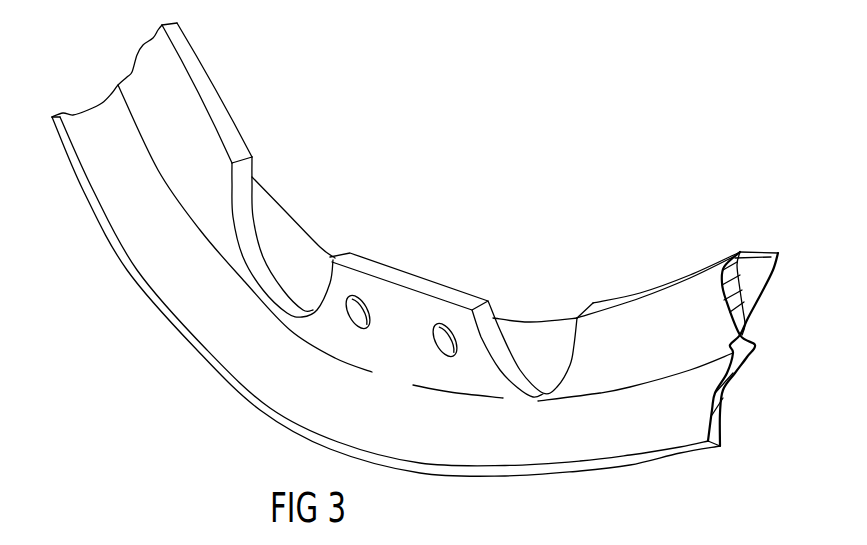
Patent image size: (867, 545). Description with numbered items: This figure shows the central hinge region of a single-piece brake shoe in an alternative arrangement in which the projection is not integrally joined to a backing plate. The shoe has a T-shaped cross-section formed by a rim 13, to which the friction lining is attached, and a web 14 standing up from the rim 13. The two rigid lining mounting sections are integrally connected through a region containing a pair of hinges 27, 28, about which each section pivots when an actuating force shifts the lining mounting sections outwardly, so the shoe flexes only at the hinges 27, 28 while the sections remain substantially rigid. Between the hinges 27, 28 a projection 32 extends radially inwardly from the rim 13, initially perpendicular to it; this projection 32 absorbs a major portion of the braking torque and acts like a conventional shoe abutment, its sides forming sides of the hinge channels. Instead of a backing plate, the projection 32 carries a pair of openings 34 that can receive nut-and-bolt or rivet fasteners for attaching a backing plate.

The rim 13 is at (173, 287).
The web 14 is at (198, 85).
The hinge 27 is at (280, 302).
The hinge 28 is at (537, 395).
The projection 32 is at (390, 272).
The openings 34 is at (437, 339).